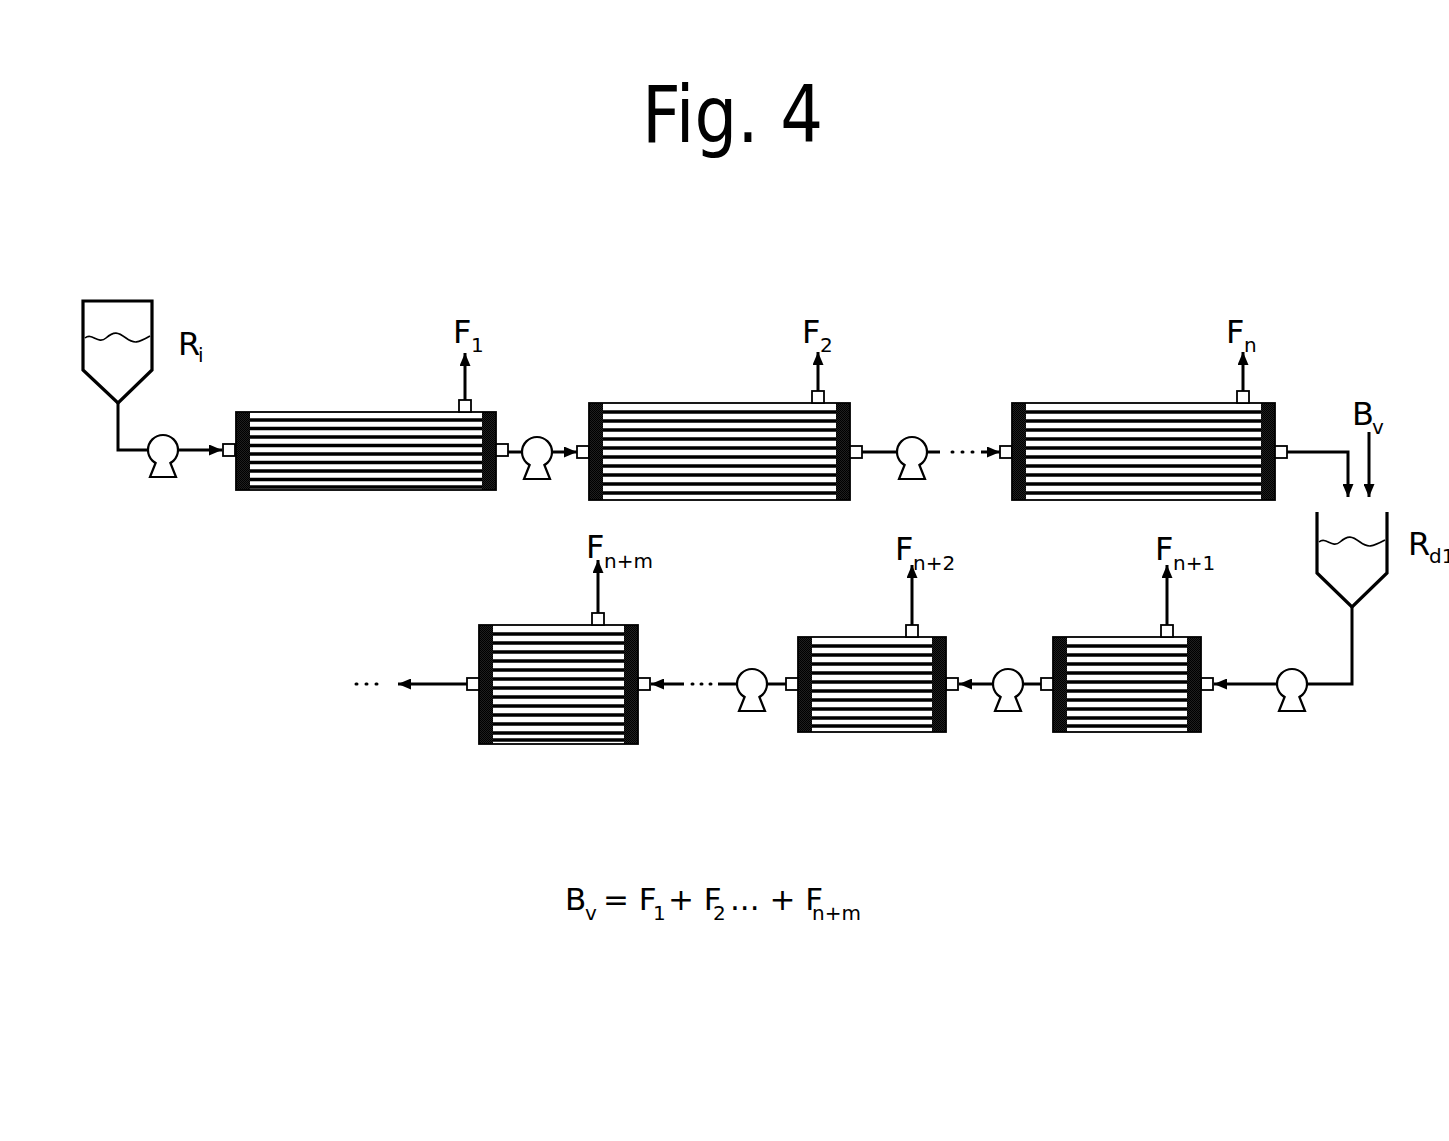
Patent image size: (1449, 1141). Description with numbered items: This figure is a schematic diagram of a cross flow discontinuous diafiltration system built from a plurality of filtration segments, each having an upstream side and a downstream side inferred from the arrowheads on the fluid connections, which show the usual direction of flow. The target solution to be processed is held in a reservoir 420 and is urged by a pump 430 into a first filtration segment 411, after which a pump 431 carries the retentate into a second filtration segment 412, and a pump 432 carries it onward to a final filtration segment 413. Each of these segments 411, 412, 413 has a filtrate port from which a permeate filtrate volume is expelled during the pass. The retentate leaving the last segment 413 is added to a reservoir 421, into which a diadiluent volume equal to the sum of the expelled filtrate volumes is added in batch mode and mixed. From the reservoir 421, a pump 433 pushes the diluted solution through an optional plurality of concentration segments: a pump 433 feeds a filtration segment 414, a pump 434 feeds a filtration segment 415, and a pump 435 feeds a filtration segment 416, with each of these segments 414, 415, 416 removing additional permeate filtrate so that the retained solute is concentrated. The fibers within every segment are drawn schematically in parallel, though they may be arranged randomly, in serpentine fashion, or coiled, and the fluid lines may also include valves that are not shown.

The filtration segment 411 is at (300, 409).
The filtration segment 412 is at (625, 400).
The filtration segment 413 is at (1050, 400).
The filtration segment 414 is at (1073, 634).
The filtration segment 415 is at (813, 634).
The filtration segment 416 is at (503, 622).
The reservoir 420 is at (160, 297).
The reservoir 421 is at (1400, 509).
The pump 430 is at (163, 482).
The pump 431 is at (537, 432).
The pump 432 is at (912, 432).
The pump 433 is at (1292, 713).
The pump 434 is at (1008, 713).
The pump 435 is at (752, 713).